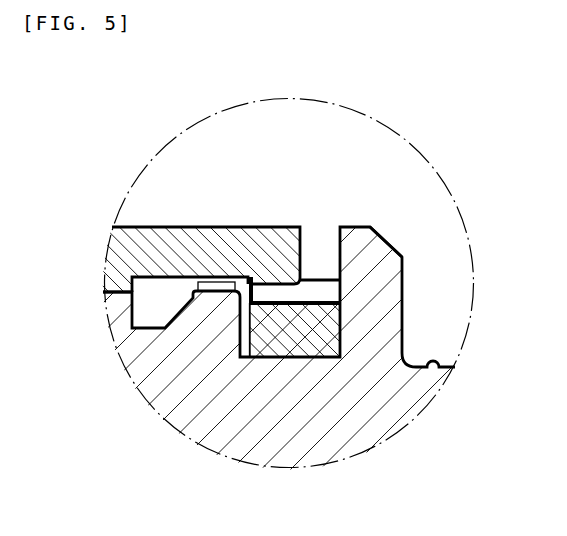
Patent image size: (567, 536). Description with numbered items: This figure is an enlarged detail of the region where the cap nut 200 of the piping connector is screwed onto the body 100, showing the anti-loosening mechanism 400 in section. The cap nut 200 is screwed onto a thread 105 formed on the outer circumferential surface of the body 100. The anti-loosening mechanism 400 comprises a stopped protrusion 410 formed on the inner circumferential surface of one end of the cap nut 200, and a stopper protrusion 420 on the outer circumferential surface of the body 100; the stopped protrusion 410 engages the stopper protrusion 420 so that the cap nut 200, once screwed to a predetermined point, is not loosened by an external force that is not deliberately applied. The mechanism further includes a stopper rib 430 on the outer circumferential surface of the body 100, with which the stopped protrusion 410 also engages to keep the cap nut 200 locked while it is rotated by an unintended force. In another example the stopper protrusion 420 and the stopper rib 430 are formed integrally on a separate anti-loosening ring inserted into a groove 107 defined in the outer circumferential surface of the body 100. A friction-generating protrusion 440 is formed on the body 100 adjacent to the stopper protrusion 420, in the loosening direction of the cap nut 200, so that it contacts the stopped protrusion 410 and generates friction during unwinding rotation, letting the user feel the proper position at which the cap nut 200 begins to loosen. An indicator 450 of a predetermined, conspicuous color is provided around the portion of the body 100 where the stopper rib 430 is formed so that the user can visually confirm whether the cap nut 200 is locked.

The body 100 is at (393, 297).
The thread 105 is at (104, 293).
The groove 107 is at (292, 356).
The cap nut 200 is at (150, 227).
The anti-loosening mechanism 400 is at (236, 236).
The stopped protrusion 410 is at (263, 301).
The stopper protrusion 420 is at (248, 276).
The stopper rib 430 is at (306, 286).
The friction-generating protrusion 440 is at (208, 276).
The indicator 450 is at (256, 316).